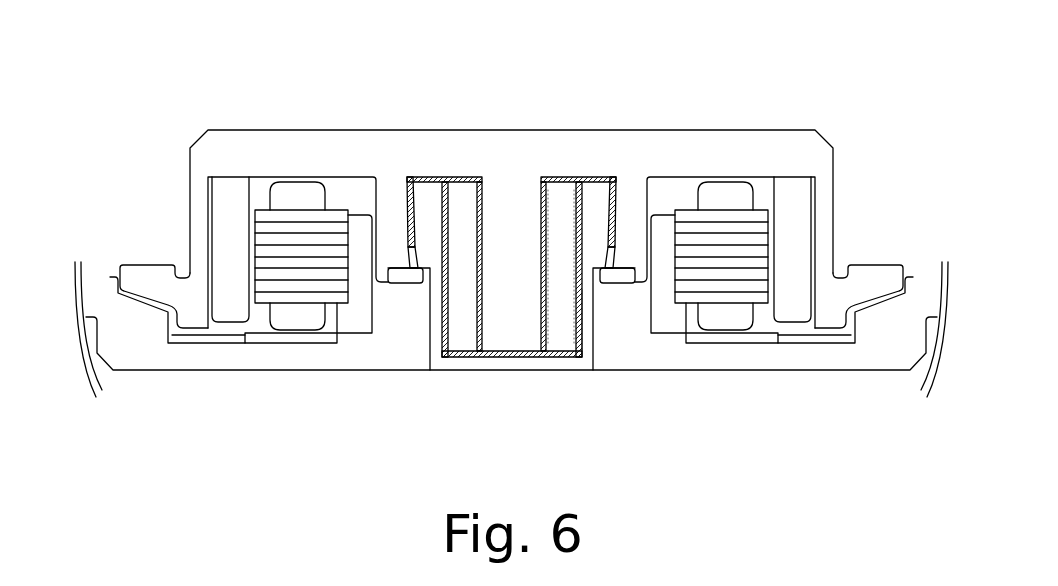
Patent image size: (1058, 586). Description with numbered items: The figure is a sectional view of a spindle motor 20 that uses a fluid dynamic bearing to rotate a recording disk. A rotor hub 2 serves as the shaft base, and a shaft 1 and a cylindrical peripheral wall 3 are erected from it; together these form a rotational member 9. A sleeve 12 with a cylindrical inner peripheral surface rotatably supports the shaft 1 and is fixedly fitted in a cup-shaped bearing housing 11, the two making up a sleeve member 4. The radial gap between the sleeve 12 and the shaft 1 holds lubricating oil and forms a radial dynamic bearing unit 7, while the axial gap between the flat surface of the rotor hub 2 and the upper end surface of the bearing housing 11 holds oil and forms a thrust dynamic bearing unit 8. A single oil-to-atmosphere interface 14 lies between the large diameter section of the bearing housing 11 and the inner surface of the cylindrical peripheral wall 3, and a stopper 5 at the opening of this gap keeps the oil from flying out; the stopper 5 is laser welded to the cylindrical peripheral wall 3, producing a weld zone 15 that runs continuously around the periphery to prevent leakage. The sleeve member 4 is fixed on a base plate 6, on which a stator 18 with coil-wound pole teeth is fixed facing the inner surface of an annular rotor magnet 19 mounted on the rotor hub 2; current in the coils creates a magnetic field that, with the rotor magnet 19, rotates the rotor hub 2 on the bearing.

The spindle motor 20 is at (178, 131).
The rotor hub 2 is at (296, 157).
The rotational member 9 is at (580, 195).
The cylindrical peripheral wall 3 is at (390, 235).
The shaft 1 is at (497, 237).
The radial dynamic bearing unit 7 is at (547, 185).
The thrust dynamic bearing unit 8 is at (586, 177).
The interface 14 is at (612, 237).
The sleeve member 4 is at (531, 327).
The sleeve 12 is at (562, 317).
The bearing housing 11 is at (584, 318).
The stopper 5 is at (405, 273).
The weld zone 15 is at (628, 284).
The base plate 6 is at (648, 317).
The stator 18 is at (310, 248).
The rotor magnet 19 is at (243, 262).